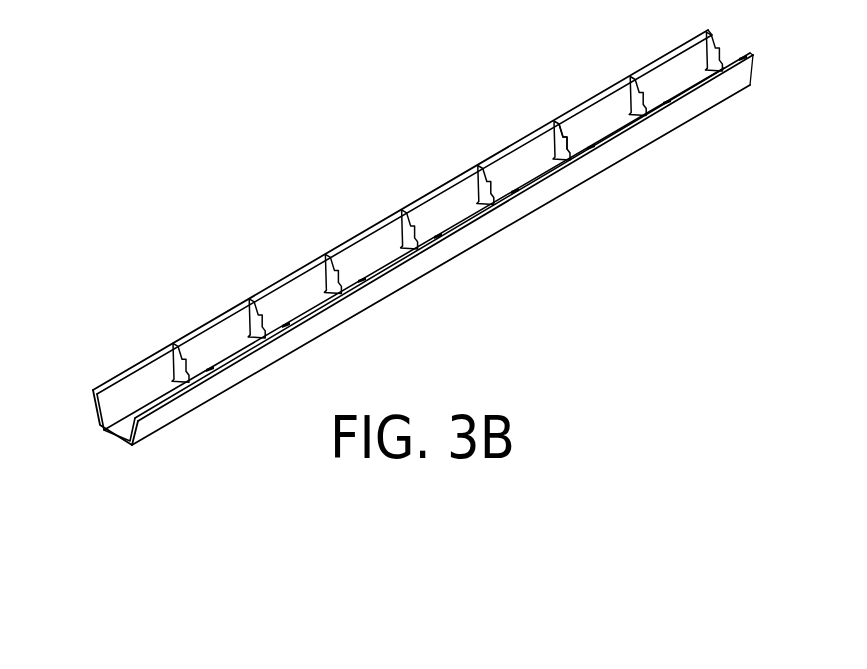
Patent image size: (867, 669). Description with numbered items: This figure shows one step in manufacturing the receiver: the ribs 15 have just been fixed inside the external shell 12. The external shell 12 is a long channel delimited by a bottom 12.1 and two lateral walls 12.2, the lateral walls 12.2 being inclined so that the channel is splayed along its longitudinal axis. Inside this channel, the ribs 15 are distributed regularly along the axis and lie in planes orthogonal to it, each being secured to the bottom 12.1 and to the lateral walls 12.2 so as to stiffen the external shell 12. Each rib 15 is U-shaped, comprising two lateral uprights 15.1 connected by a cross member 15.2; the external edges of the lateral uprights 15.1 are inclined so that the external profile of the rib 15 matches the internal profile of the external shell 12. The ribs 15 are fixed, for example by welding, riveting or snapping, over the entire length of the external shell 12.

The external shell 12 is at (395, 252).
The bottom 12.1 is at (122, 420).
The lateral walls 12.2 is at (205, 343).
The ribs 15 is at (400, 228).
The lateral uprights 15.1 is at (552, 132).
The cross member 15.2 is at (568, 117).